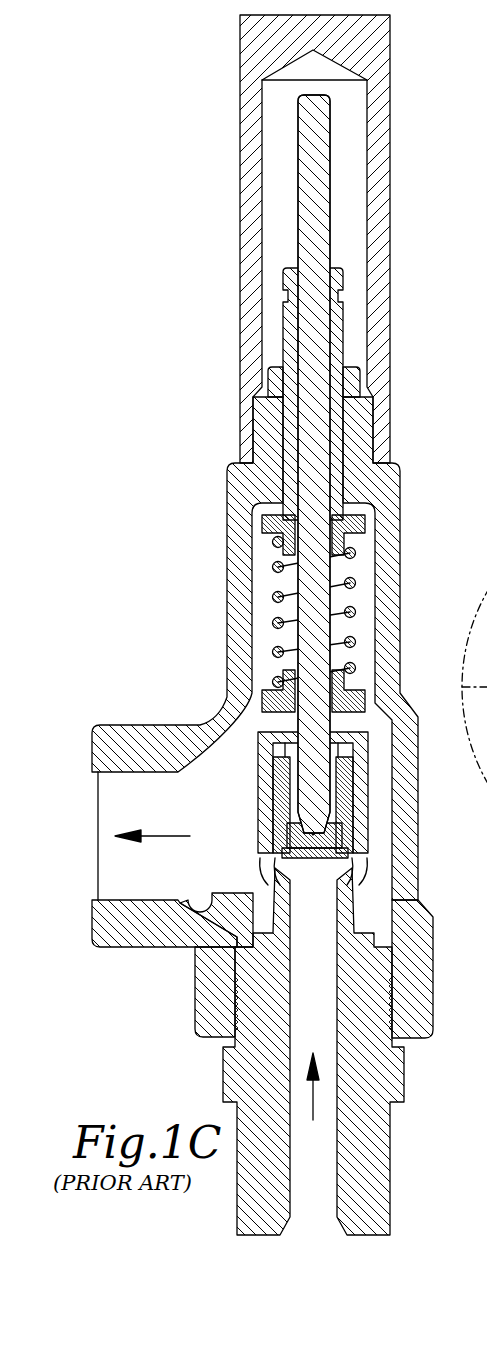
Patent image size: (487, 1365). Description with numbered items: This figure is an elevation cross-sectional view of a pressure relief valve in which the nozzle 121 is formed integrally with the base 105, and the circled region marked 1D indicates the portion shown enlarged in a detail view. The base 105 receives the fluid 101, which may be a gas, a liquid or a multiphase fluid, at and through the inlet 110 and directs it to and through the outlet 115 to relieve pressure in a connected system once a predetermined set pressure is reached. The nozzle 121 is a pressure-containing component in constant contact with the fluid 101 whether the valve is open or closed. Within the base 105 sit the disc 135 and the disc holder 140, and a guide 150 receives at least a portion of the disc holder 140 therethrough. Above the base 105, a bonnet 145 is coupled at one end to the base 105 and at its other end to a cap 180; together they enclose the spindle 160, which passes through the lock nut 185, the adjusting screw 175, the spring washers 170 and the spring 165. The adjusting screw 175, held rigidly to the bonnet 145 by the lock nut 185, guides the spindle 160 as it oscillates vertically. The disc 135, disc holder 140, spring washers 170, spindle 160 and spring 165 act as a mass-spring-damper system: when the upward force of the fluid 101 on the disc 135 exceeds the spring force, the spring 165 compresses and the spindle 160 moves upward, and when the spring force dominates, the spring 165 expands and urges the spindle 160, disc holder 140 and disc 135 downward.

The fluid 101 is at (165, 842).
The base 105 is at (118, 947).
The inlet 110 is at (313, 1192).
The outlet 115 is at (128, 808).
The nozzle 121 is at (362, 893).
The disc 135 is at (342, 838).
The disc holder 140 is at (383, 921).
The bonnet 145 is at (392, 478).
The guide 150 is at (262, 745).
The spindle 160 is at (330, 184).
The spring 165 is at (270, 590).
The spring washers 170 is at (270, 522).
The adjusting screw 175 is at (343, 323).
The cap 180 is at (248, 90).
The lock nut 185 is at (356, 380).
The detail view indicator 1D is at (372, 882).